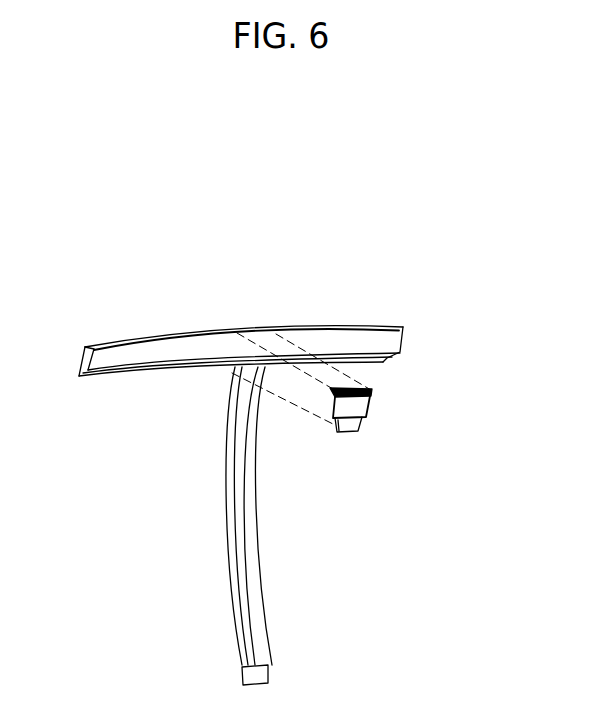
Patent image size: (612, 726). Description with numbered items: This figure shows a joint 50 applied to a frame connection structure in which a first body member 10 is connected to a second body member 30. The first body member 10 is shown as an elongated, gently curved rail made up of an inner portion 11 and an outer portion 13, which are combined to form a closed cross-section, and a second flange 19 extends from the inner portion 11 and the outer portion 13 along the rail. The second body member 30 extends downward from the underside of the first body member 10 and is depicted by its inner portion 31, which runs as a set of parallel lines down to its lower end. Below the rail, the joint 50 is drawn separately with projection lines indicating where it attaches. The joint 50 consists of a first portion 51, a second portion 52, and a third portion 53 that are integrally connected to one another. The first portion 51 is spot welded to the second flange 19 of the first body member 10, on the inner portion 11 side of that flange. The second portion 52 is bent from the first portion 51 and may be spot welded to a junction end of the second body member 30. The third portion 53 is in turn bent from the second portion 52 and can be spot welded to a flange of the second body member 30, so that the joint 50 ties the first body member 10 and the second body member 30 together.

The first body member 10 is at (246, 328).
The inner portion 11 is at (118, 350).
The outer portion 13 is at (80, 358).
The second flange 19 is at (175, 335).
The second body member 30 is at (242, 526).
The inner portion 31 is at (257, 598).
The joint 50 is at (372, 433).
The first portion 51 is at (371, 388).
The second portion 52 is at (362, 403).
The third portion 53 is at (360, 430).